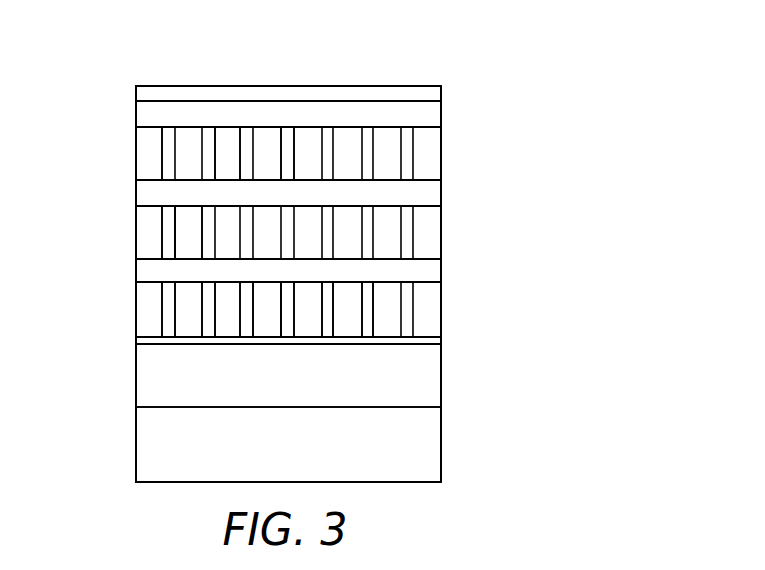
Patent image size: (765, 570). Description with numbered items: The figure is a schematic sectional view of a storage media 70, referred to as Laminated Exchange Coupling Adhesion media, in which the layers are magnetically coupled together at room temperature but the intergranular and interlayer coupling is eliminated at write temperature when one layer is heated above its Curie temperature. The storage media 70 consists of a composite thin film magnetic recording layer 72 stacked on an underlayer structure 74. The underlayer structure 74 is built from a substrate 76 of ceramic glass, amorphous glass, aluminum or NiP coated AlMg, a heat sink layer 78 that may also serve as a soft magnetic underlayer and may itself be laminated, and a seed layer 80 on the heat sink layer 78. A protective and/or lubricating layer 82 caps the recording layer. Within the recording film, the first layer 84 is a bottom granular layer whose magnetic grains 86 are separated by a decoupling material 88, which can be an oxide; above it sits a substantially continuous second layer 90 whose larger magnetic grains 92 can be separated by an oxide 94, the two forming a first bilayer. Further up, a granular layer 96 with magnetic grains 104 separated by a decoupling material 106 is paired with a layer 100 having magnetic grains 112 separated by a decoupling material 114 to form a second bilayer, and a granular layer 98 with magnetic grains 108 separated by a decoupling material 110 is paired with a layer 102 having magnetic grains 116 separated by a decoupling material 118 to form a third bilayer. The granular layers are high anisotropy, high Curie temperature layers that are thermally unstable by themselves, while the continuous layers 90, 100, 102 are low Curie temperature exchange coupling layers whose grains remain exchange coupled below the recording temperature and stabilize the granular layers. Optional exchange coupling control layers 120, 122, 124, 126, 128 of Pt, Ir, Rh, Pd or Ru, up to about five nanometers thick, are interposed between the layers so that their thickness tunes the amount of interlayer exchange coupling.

The storage media 70 is at (376, 261).
The composite thin film magnetic recording layer 72 is at (130, 103).
The underlayer structure 74 is at (128, 345).
The substrate 76 is at (430, 448).
The heat sink layer 78 is at (432, 388).
The seed layer 80 is at (435, 342).
The protective and/or lubricating layer 82 is at (391, 97).
The first layer 84 is at (450, 315).
The magnetic grains 86 is at (262, 330).
The decoupling material 88 is at (367, 330).
The second layer 90 is at (450, 272).
The magnetic grains 92 is at (138, 282).
The oxide 94 is at (145, 268).
The layer 96 is at (450, 232).
The layer 98 is at (450, 153).
The layer 100 is at (450, 190).
The layer 102 is at (450, 114).
The magnetic grains 104 is at (180, 242).
The decoupling material 106 is at (167, 225).
The magnetic grains 108 is at (230, 137).
The decoupling material 110 is at (288, 137).
The magnetic grains 112 is at (148, 195).
The decoupling material 114 is at (148, 178).
The magnetic grains 116 is at (185, 115).
The decoupling material 118 is at (152, 108).
The exchange coupling control layer 120 is at (441, 283).
The exchange coupling control layer 122 is at (441, 259).
The exchange coupling control layer 124 is at (441, 207).
The exchange coupling control layer 126 is at (441, 180).
The exchange coupling control layer 128 is at (441, 128).